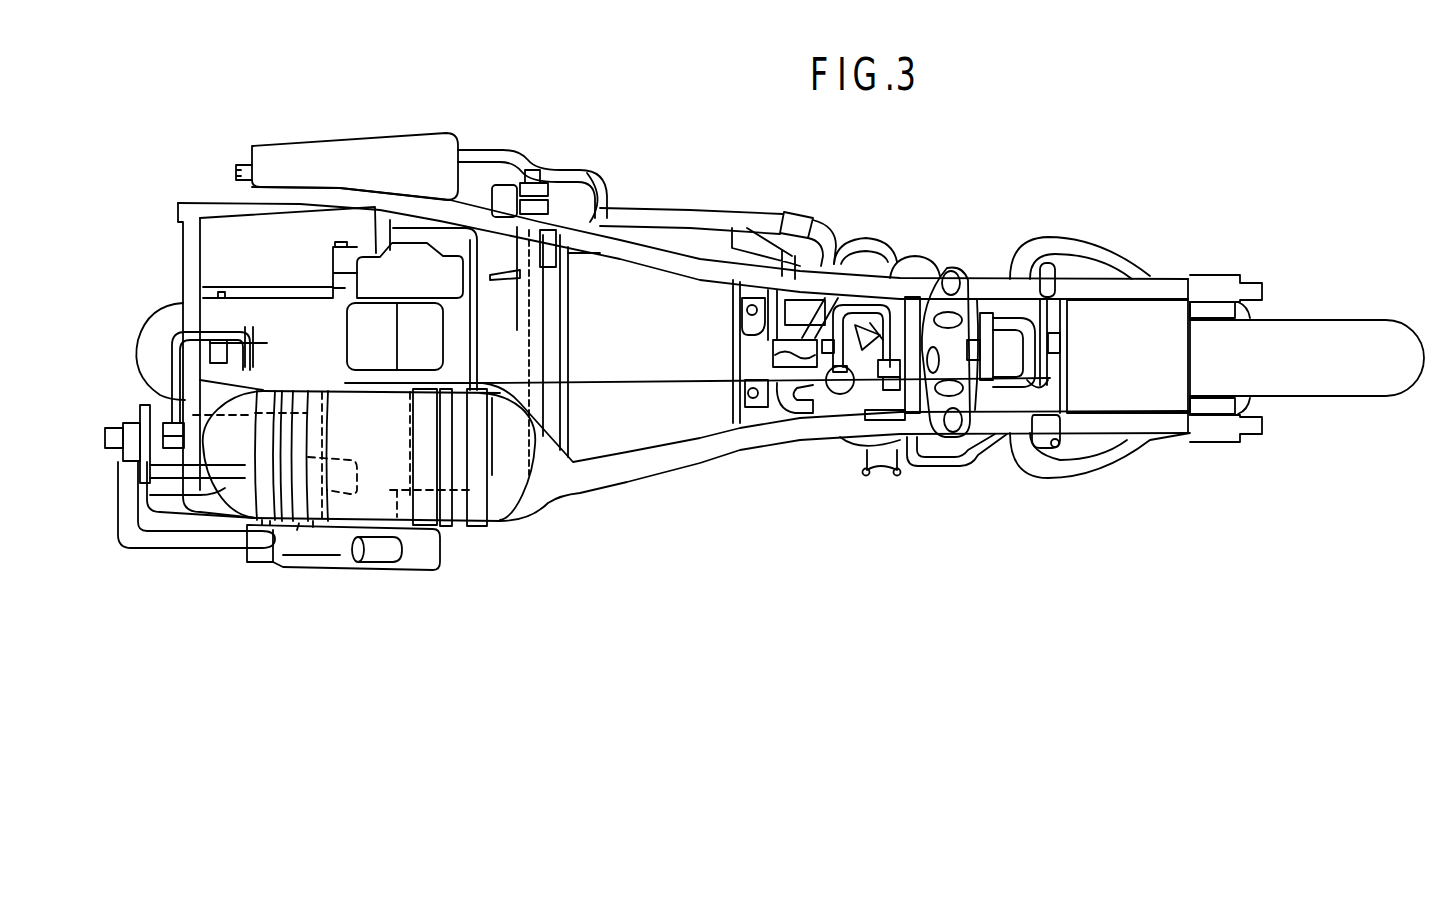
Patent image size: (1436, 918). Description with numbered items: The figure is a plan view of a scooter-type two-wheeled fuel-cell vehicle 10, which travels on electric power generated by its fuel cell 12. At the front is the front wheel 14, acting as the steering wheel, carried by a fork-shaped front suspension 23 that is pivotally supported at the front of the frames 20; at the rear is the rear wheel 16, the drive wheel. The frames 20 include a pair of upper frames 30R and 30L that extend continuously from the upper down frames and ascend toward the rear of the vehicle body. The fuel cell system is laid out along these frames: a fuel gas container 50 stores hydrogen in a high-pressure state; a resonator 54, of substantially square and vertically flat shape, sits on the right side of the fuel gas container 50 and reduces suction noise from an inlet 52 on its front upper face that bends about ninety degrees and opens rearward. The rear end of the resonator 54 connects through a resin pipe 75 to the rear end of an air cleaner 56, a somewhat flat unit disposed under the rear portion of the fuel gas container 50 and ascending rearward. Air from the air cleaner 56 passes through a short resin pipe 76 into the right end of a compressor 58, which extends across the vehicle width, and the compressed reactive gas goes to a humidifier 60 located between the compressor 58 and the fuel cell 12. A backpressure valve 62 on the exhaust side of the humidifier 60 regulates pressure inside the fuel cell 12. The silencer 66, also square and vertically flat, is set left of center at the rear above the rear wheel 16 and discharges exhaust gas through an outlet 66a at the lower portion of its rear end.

The two-wheeled fuel-cell vehicle 10 is at (1162, 170).
The fuel cell 12 is at (658, 418).
The front wheel 14 is at (1345, 337).
The rear wheel 16 is at (152, 341).
The frames 20 is at (808, 450).
The front suspension 23 is at (1225, 428).
The upper frame 30L is at (643, 253).
The upper frame 30R is at (617, 458).
The fuel gas container 50 is at (455, 507).
The inlet 52 is at (372, 558).
The resonator 54 is at (338, 555).
The air cleaner 56 is at (172, 498).
The compressor 58 is at (347, 330).
The humidifier 60 is at (500, 323).
The backpressure valve 62 is at (547, 243).
The silencer 66 is at (334, 157).
The outlet 66a is at (233, 170).
The resin pipe 75 is at (212, 542).
The resin pipe 76 is at (297, 530).